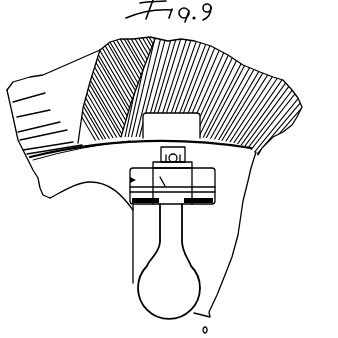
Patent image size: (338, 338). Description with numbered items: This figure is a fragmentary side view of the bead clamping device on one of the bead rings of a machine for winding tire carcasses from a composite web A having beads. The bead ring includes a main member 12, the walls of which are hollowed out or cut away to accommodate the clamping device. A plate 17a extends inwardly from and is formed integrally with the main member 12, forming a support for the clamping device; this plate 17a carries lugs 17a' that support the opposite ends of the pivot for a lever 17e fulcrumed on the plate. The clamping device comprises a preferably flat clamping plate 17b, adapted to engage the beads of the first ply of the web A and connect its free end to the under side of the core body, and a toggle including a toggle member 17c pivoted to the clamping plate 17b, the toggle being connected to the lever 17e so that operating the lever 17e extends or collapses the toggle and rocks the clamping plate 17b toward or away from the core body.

The composite web A is at (183, 95).
The main member 12 is at (55, 192).
The plate 17a is at (163, 234).
The lugs 17a' is at (158, 242).
The clamping plate 17b is at (195, 128).
The toggle member 17c is at (160, 152).
The lever 17e is at (153, 288).